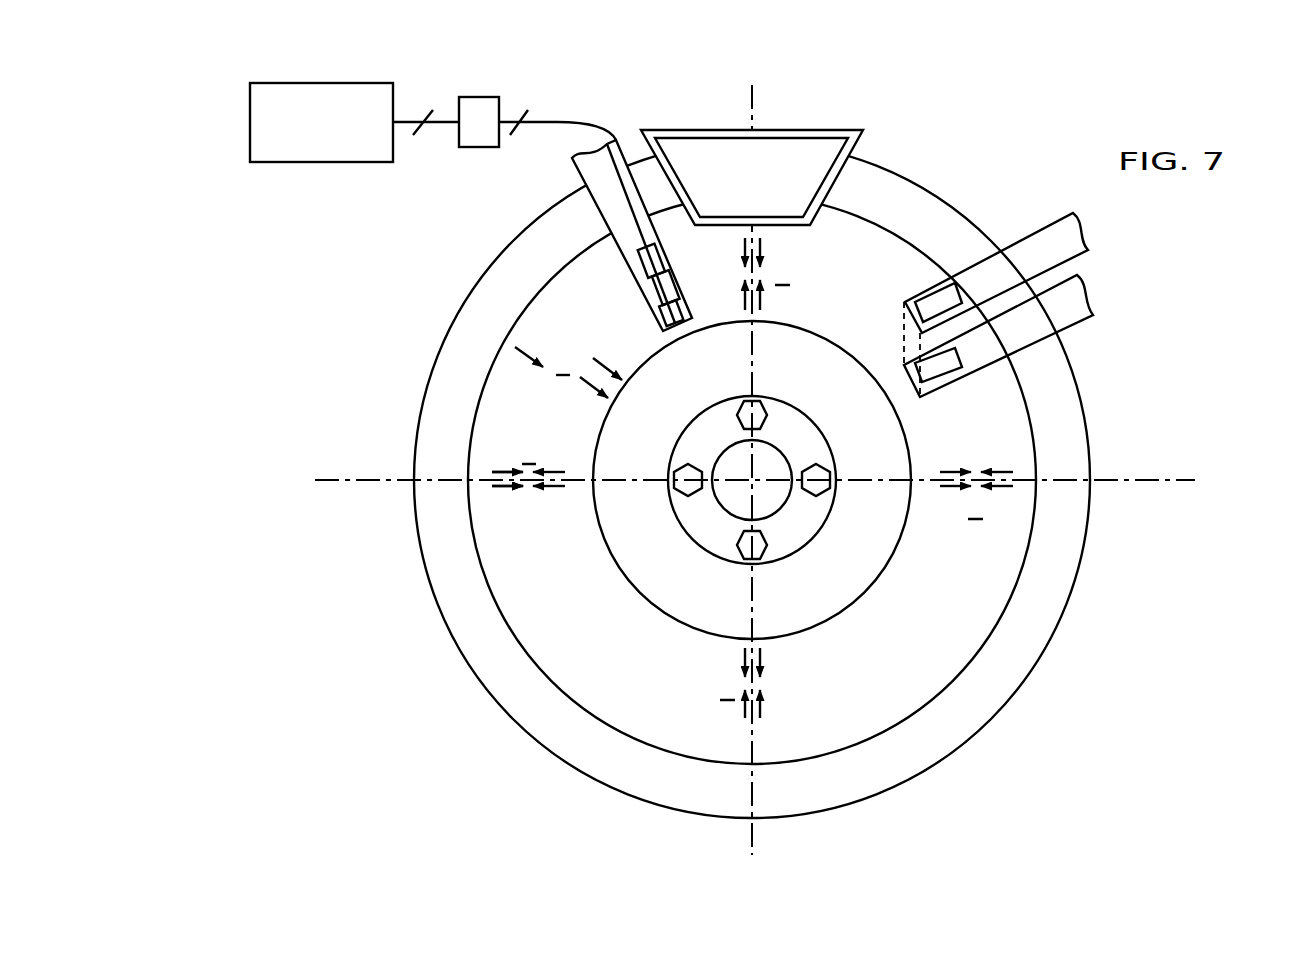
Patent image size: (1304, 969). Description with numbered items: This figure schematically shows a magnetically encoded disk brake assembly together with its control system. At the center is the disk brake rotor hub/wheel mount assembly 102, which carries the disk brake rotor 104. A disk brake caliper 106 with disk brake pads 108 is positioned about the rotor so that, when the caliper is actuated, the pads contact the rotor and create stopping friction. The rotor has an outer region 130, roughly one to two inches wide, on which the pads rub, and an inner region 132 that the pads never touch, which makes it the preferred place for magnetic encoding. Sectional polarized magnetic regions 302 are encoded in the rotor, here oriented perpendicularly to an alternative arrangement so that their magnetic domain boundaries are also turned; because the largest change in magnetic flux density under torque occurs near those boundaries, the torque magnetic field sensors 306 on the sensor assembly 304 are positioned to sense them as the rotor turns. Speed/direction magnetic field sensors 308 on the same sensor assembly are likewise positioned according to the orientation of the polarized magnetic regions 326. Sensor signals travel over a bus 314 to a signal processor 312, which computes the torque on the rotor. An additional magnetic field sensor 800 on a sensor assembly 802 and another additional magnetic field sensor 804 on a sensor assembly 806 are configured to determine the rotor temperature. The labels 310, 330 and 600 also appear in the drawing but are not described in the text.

The disk brake rotor hub/wheel mount assembly 102 is at (858, 620).
The disk brake rotor 104 is at (952, 205).
The disk brake caliper 106 is at (878, 122).
The disk brake pads 108 is at (840, 178).
The outer region 130 is at (935, 232).
The inner region 132 is at (945, 607).
The sectional polarized magnetic regions 302 is at (780, 248).
The sensor assembly 304 is at (622, 142).
The torque magnetic field sensors 306 is at (650, 290).
The speed/direction magnetic field sensors 308 is at (640, 268).
The controller 310 is at (250, 122).
The signal processor 312 is at (480, 97).
The bus 314 is at (535, 125).
The polarized magnetic regions 326 is at (528, 385).
The sensing system 330 is at (562, 68).
The apparatus 600 is at (792, 93).
The additional magnetic field sensor 800 is at (940, 368).
The sensor assembly 802 is at (1077, 302).
The additional magnetic field sensor 804 is at (938, 300).
The sensor assembly 806 is at (1060, 243).